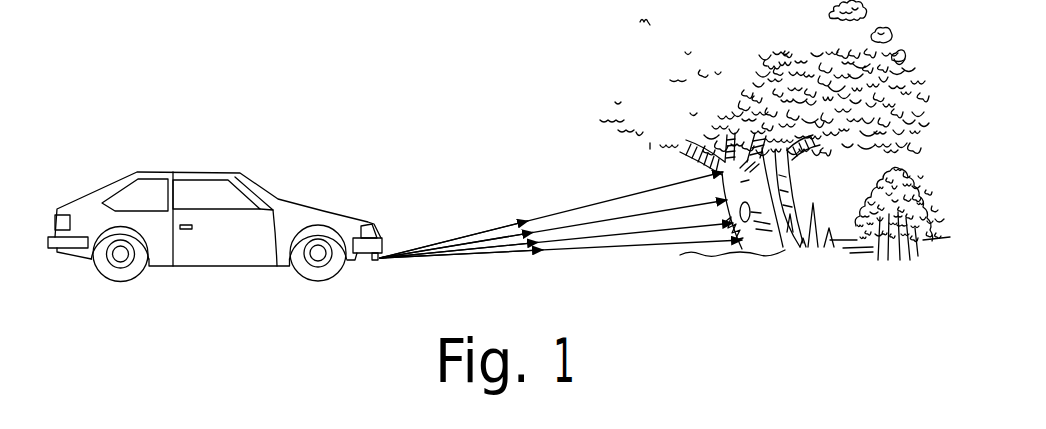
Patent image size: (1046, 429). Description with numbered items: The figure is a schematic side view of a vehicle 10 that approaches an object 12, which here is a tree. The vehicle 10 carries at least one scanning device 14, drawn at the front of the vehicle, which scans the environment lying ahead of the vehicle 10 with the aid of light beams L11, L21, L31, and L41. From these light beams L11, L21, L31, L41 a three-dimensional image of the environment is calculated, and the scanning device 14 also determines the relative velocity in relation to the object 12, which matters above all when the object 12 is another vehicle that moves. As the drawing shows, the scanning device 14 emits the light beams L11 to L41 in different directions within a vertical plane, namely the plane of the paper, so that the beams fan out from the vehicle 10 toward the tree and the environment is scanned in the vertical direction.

The vehicle 10 is at (218, 171).
The object 12 is at (580, 68).
The scanning device 14 is at (386, 254).
The light beam L11 is at (597, 237).
The light beam L21 is at (630, 248).
The light beam L31 is at (595, 223).
The light beam L41 is at (561, 208).